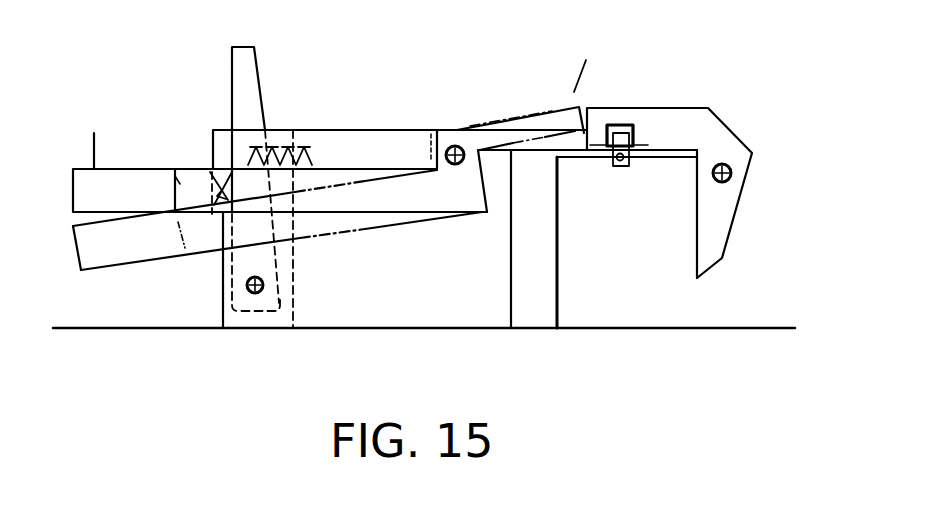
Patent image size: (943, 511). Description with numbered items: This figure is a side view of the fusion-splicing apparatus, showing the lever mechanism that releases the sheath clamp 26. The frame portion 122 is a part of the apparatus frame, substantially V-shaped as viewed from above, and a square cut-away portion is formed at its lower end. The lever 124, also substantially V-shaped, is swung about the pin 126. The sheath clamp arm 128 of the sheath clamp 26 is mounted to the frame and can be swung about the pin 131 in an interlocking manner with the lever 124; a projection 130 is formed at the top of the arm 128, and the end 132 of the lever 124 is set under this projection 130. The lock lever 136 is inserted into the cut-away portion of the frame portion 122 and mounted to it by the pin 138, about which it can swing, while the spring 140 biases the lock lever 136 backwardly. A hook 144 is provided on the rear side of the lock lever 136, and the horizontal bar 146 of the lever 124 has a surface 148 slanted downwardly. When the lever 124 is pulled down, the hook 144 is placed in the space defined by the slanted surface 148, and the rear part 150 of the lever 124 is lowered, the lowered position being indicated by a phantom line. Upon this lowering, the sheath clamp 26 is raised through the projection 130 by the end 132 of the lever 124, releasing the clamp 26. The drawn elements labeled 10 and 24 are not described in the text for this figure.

The pivot pin 10 is at (620, 167).
The base 24 is at (592, 310).
The sheath clamp 26 is at (620, 125).
The frame portion 122 is at (362, 140).
The lever 124 is at (380, 218).
The pin 126 is at (455, 145).
The sheath clamp arm 128 is at (668, 122).
The projection 130 is at (577, 118).
The pin 131 is at (731, 182).
The end of lever 132 is at (550, 130).
The lock lever 136 is at (240, 63).
The pin 138 is at (255, 293).
The spring 140 is at (270, 123).
The hook 144 is at (210, 172).
The horizontal bar 146 is at (175, 176).
The slanted surface 148 is at (210, 216).
The rear part of lever 150 is at (85, 187).